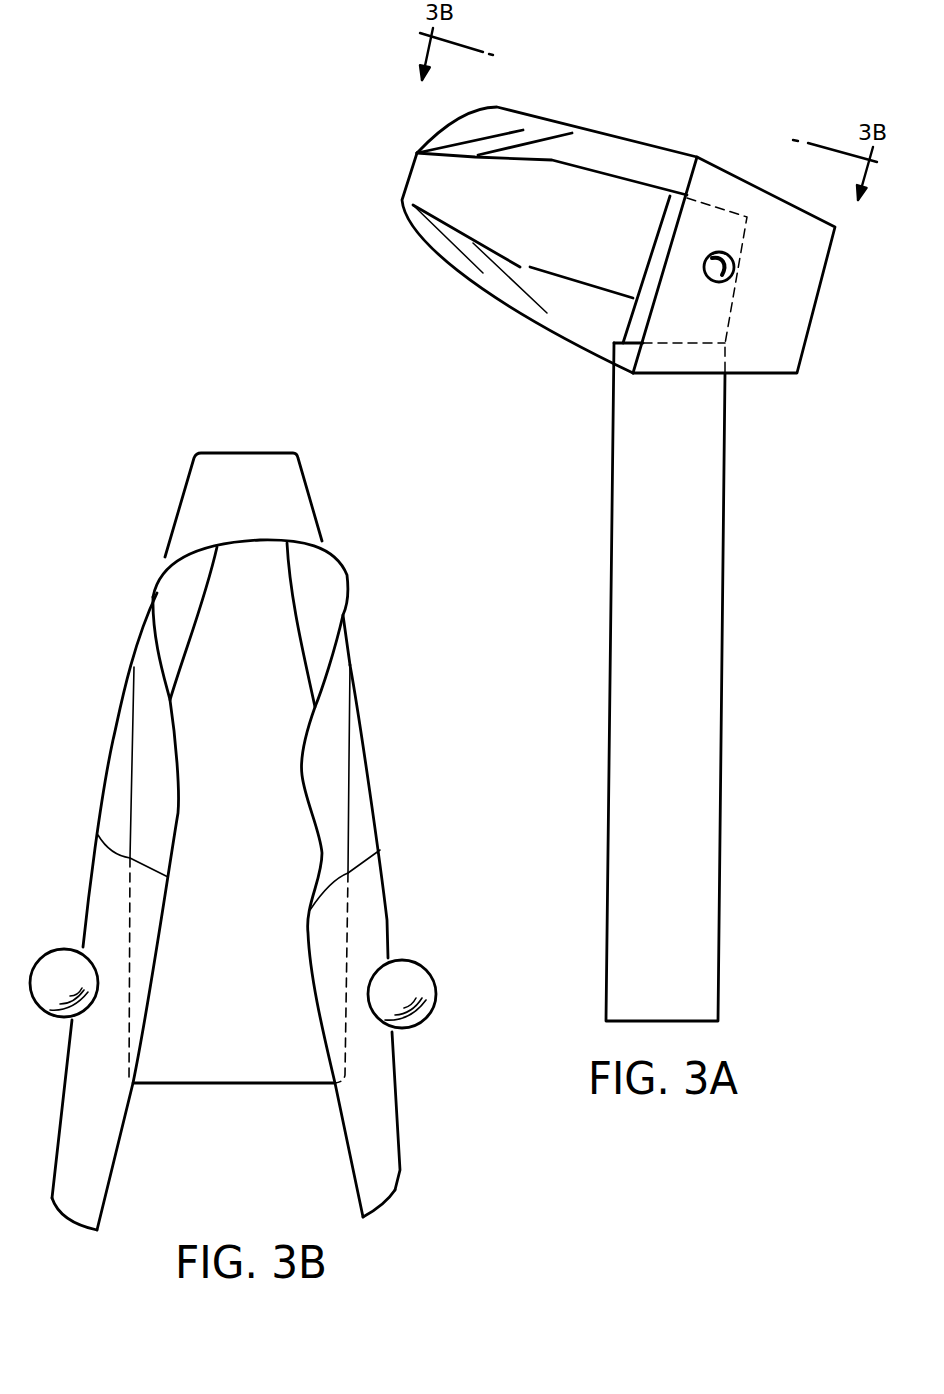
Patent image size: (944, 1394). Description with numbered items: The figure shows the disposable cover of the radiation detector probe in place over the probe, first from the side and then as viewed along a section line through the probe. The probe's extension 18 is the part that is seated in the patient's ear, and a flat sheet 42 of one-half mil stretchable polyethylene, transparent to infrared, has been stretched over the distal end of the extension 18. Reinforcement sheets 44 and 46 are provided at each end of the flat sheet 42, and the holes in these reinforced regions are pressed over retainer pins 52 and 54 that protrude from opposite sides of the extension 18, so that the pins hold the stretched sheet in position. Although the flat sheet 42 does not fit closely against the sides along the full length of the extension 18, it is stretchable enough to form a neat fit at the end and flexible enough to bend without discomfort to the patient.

The extension 18 is at (375, 908).
The flat sheet 42 is at (373, 825).
The reinforcement sheet 44 is at (70, 1127).
The reinforcement sheet 46 is at (377, 1088).
The pin 52 is at (56, 957).
The pin 54 is at (427, 972).